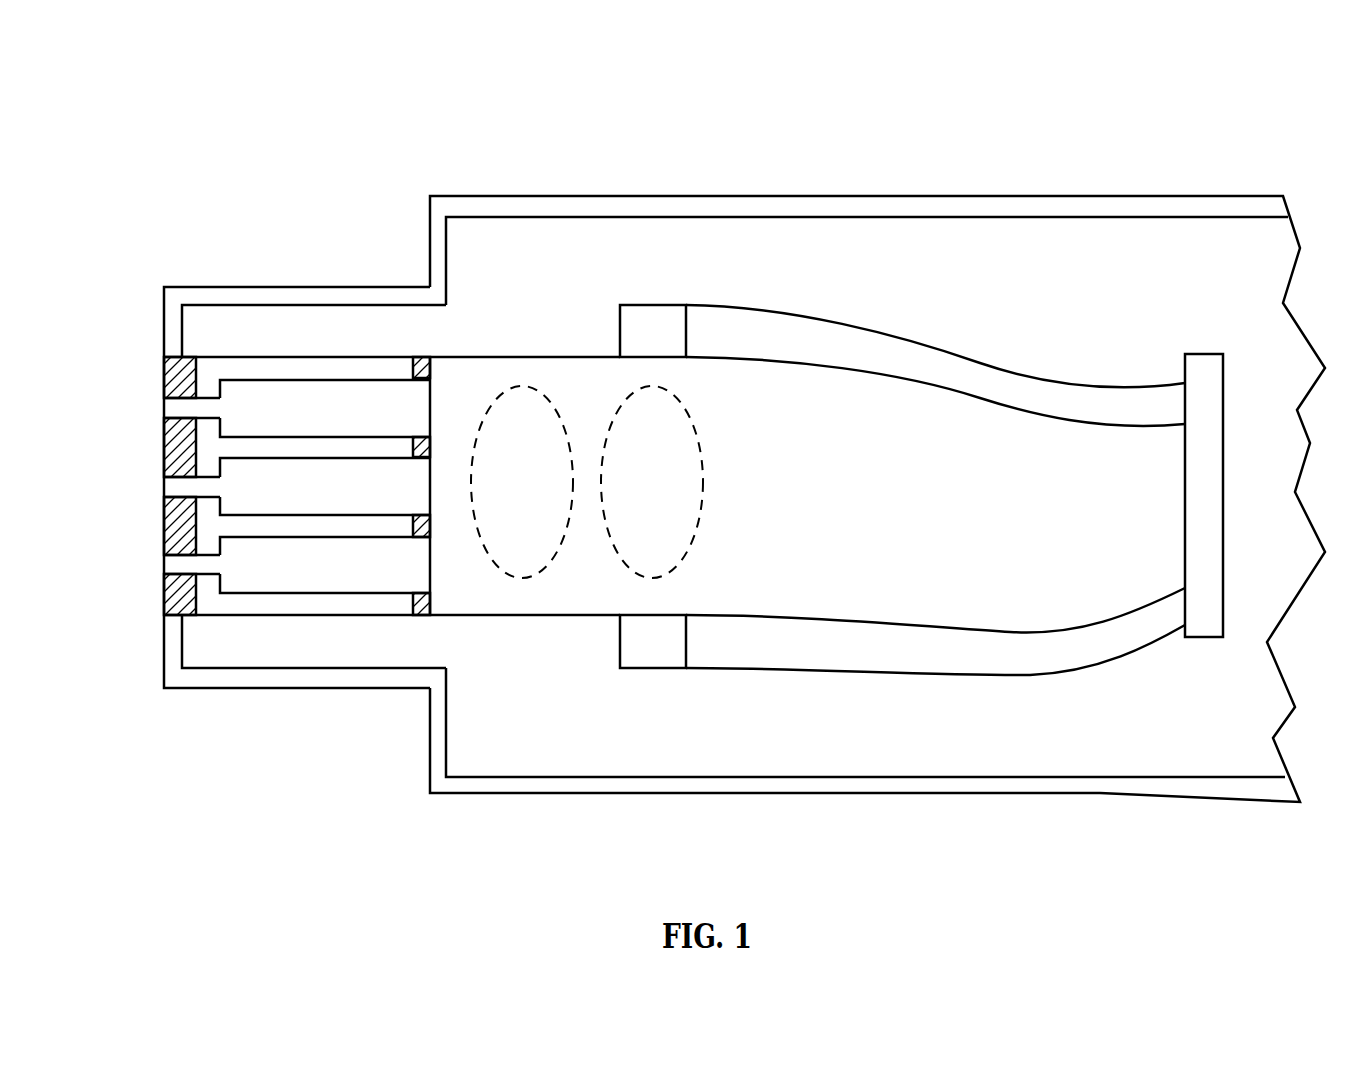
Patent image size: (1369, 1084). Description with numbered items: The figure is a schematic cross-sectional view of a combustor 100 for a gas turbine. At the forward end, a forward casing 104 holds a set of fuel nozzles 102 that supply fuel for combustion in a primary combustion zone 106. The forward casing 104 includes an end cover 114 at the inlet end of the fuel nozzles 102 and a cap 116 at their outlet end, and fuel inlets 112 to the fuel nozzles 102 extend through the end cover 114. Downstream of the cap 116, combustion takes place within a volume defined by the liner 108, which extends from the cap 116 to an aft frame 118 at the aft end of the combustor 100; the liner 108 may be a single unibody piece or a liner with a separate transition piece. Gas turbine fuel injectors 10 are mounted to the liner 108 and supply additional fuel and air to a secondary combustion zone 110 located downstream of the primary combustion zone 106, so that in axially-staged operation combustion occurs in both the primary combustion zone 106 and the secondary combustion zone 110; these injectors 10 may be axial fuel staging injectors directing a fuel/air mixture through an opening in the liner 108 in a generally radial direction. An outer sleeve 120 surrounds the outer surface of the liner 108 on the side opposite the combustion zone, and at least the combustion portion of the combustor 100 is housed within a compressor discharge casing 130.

The combustor 100 is at (1133, 140).
The compressor discharge casing 130 is at (1073, 207).
The forward casing 104 is at (243, 297).
The end cover 114 is at (172, 597).
The fuel inlets 112 is at (177, 409).
The fuel nozzles 102 is at (338, 425).
The cap 116 is at (413, 441).
The gas turbine fuel injectors 10 is at (669, 349).
The primary combustion zone 106 is at (544, 499).
The secondary combustion zone 110 is at (674, 499).
The liner 108 is at (900, 378).
The outer sleeve 120 is at (957, 355).
The aft frame 118 is at (1210, 487).